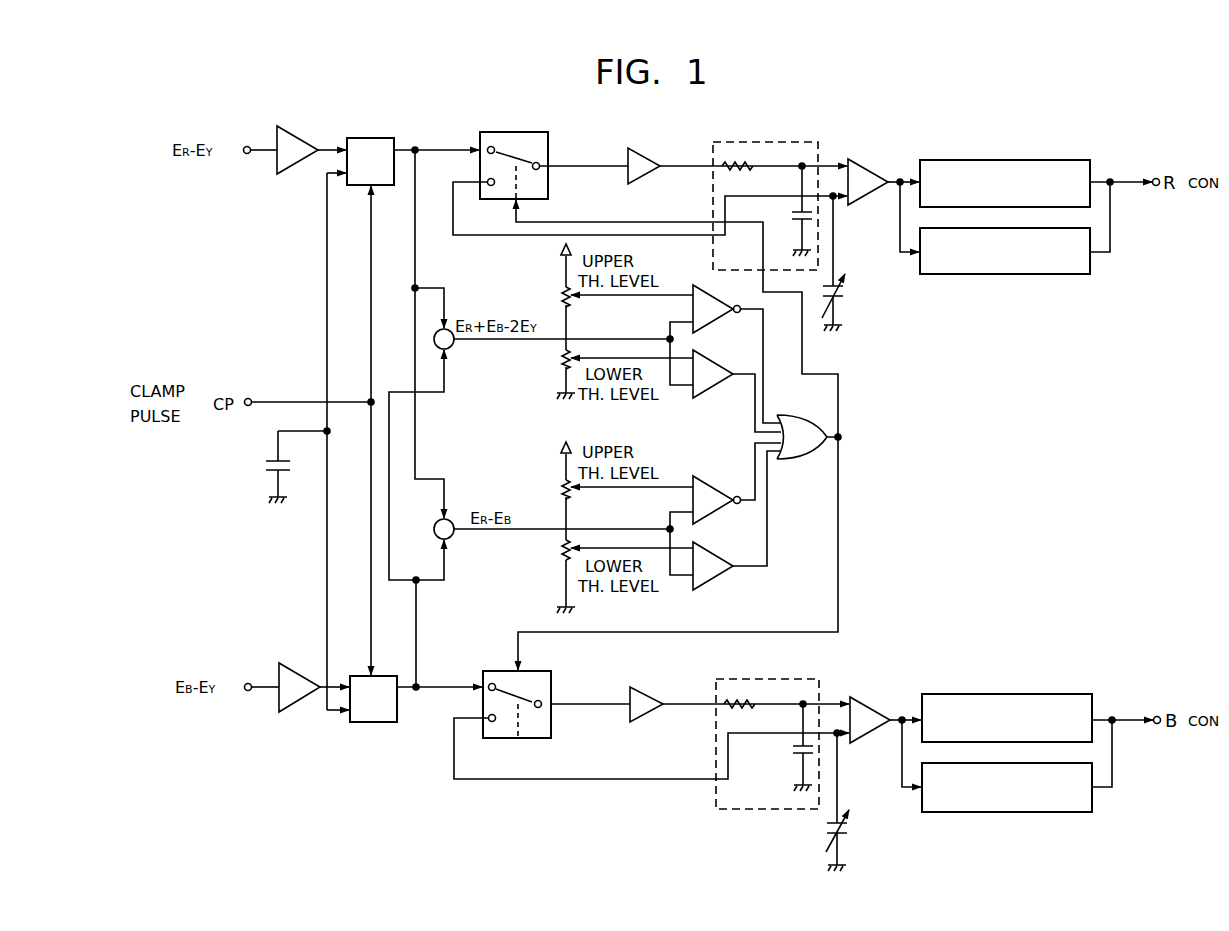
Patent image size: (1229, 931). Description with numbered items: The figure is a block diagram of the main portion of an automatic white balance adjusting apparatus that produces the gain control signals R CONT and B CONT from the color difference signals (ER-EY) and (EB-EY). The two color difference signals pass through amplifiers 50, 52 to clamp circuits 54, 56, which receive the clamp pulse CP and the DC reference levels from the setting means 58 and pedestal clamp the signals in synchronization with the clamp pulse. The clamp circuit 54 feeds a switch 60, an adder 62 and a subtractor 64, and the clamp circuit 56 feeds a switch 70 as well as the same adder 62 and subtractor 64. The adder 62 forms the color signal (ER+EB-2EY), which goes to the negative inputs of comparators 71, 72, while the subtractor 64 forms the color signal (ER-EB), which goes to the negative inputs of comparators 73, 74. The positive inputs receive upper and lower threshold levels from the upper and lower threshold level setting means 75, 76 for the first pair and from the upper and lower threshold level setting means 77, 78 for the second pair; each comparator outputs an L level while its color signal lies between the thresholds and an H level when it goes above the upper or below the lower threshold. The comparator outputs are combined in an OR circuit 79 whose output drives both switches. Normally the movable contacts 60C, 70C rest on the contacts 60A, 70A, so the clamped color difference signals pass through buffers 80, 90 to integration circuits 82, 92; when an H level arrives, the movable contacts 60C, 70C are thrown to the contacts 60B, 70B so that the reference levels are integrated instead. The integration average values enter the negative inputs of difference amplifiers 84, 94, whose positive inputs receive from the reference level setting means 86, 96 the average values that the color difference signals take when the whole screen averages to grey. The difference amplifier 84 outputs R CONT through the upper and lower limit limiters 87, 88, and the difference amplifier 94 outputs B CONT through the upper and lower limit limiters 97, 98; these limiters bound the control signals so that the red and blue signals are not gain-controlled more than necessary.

The amplifier 50 is at (297, 132).
The amplifier 52 is at (298, 665).
The clamp circuit 54 is at (375, 137).
The clamp circuit 56 is at (387, 675).
The setting means 58 is at (268, 466).
The switch 60 is at (516, 131).
The contact 60A is at (491, 145).
The contact 60B is at (490, 196).
The movable contact 60C is at (538, 161).
The adder 62 is at (433, 338).
The subtractor 64 is at (434, 530).
The switch 70 is at (553, 672).
The contact 70A is at (490, 682).
The contact 70B is at (493, 723).
The movable contact 70C is at (546, 712).
The comparator 71 is at (713, 296).
The comparator 72 is at (718, 368).
The comparator 73 is at (718, 490).
The comparator 74 is at (718, 568).
The upper threshold level setting means 75 is at (562, 291).
The lower threshold level setting means 76 is at (562, 367).
The upper threshold level setting means 77 is at (562, 483).
The lower threshold level setting means 78 is at (562, 555).
The OR circuit 79 is at (803, 459).
The buffer 80 is at (644, 154).
The integration circuit 82 is at (792, 141).
The difference amplifier 84 is at (866, 160).
The reference level setting means 86 is at (846, 300).
The upper limit limiter 87 is at (1010, 159).
The lower limit limiter 88 is at (1012, 276).
The buffer 90 is at (646, 695).
The integration circuit 92 is at (782, 680).
The difference amplifier 94 is at (870, 705).
The reference level setting means 96 is at (848, 828).
The upper limit limiter 97 is at (1008, 692).
The lower limit limiter 98 is at (1010, 814).